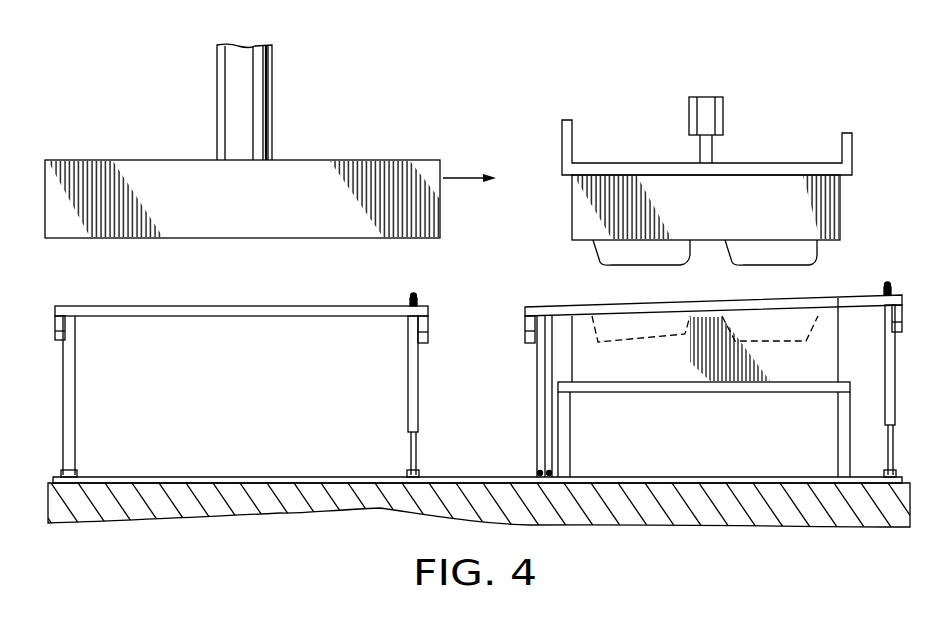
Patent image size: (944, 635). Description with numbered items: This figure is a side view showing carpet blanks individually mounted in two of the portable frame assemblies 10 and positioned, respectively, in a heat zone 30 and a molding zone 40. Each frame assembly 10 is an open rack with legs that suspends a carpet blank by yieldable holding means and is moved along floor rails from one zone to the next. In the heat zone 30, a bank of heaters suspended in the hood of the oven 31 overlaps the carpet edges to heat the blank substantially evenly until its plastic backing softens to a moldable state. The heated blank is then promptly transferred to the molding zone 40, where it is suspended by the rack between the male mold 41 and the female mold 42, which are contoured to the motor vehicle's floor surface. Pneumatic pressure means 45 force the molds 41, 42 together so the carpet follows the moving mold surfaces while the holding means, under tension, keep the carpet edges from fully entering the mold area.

The frame assembly 10 is at (332, 312).
The heat zone 30 is at (270, 141).
The oven 31 is at (172, 167).
The molding zone 40 is at (707, 171).
The male mold 41 is at (717, 216).
The female mold 42 is at (680, 363).
The pneumatic pressure means 45 is at (723, 111).